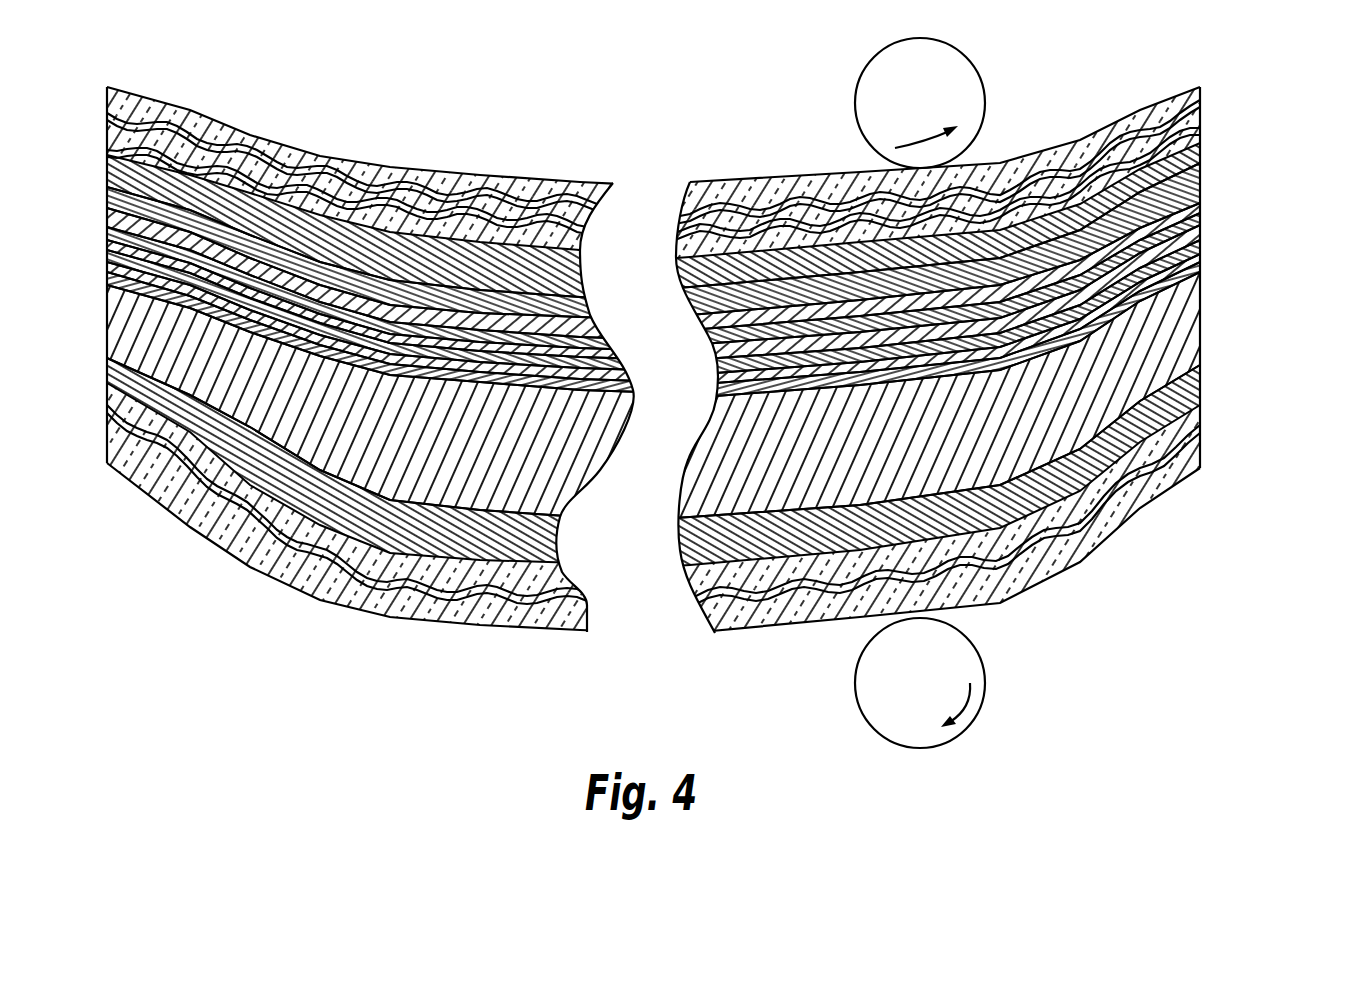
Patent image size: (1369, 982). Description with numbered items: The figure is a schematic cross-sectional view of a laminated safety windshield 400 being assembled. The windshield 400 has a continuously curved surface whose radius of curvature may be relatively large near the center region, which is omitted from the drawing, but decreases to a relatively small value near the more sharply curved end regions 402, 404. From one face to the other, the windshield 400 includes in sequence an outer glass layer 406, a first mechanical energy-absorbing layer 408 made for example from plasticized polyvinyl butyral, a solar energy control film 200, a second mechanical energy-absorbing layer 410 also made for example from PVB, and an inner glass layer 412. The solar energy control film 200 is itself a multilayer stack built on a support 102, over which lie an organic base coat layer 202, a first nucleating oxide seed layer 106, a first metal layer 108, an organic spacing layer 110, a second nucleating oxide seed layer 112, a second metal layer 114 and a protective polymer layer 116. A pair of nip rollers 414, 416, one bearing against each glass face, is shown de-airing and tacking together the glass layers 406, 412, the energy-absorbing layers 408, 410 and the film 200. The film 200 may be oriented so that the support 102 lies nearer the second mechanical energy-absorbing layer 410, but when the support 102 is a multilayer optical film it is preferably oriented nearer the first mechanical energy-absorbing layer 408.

The laminated safety windshield 400 is at (675, 118).
The end region 402 is at (300, 632).
The end region 404 is at (983, 633).
The outer glass layer 406 is at (1200, 393).
The first mechanical energy-absorbing layer 408 is at (1200, 388).
The second mechanical energy-absorbing layer 410 is at (1200, 158).
The inner glass layer 412 is at (1200, 82).
The nip roller 414 is at (930, 737).
The nip roller 416 is at (885, 77).
The solar energy control film 200 is at (703, 328).
The support 102 is at (1200, 340).
The first nucleating oxide seed layer 106 is at (1200, 260).
The first metal layer 108 is at (1200, 250).
The organic spacing layer 110 is at (1200, 233).
The second nucleating oxide seed layer 112 is at (1200, 217).
The second metal layer 114 is at (1200, 207).
The protective polymer layer 116 is at (1200, 193).
The organic base coat layer 202 is at (1200, 265).